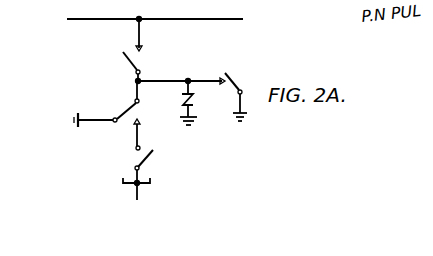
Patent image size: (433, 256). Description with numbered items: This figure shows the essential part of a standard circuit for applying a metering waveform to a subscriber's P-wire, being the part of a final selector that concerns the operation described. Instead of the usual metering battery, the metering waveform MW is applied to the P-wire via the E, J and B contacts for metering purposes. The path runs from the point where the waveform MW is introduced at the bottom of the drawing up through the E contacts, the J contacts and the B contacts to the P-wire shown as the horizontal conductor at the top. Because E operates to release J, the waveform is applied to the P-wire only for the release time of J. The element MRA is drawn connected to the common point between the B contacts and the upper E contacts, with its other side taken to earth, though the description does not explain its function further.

The element P-wire is at (155, 11).
The B contacts B is at (138, 51).
The J contacts J is at (111, 114).
The E contacts E is at (191, 120).
The element MRA is at (204, 103).
The metering waveform MW is at (139, 202).